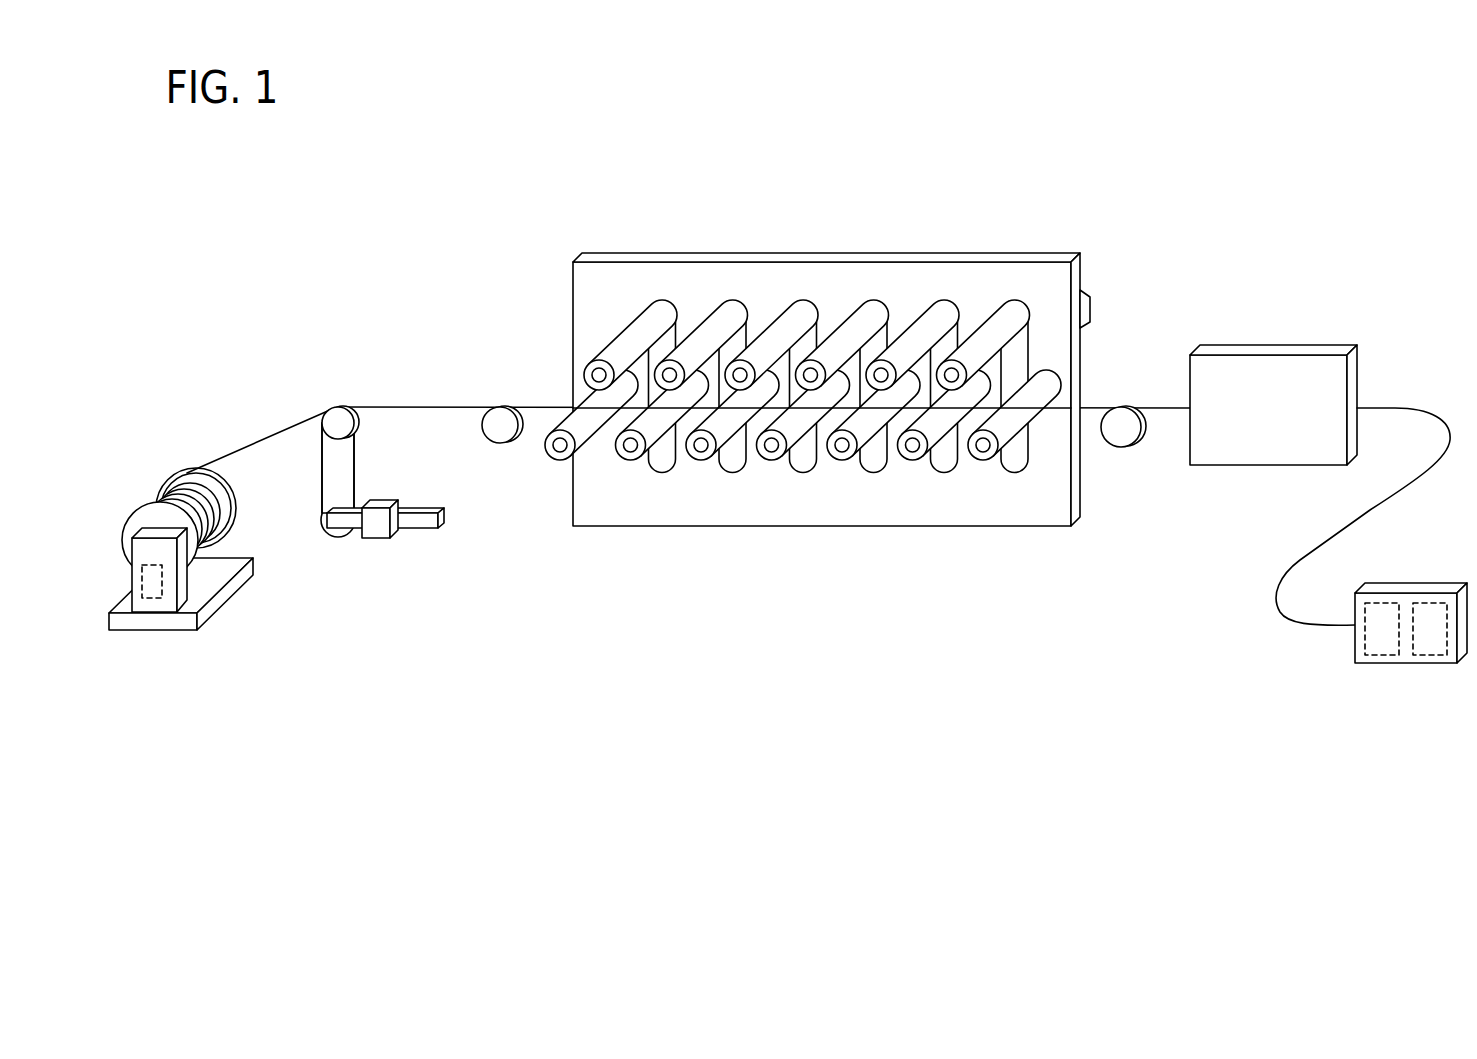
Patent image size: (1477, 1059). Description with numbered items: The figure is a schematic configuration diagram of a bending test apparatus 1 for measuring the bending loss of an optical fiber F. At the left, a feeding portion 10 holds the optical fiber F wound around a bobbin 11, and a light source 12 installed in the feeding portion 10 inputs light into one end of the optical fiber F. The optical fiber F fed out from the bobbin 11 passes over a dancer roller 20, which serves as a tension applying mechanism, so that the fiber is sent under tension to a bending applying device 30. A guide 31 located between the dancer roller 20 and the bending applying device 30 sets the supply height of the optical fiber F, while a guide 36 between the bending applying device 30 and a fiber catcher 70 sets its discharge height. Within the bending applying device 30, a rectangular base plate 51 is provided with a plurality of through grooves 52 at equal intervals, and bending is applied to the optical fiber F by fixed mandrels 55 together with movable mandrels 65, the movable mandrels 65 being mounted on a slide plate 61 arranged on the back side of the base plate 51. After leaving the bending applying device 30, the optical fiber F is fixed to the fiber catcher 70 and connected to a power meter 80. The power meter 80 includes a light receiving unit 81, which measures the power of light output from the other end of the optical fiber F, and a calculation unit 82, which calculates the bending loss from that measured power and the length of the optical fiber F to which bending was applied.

The bending test apparatus 1 is at (352, 238).
The feeding portion 10 is at (140, 470).
The bobbin 11 is at (228, 500).
The light source 12 is at (160, 600).
The optical fiber F is at (250, 440).
The dancer roller 20 is at (338, 400).
The bending applying device 30 is at (672, 235).
The guide 31 is at (500, 436).
The guide 36 is at (1122, 436).
The base plate 51 is at (913, 520).
The through groove 52 is at (733, 468).
The fixed mandrel 55 is at (660, 467).
The slide plate 61 is at (1092, 285).
The movable mandrel 65 is at (1010, 318).
The fiber catcher 70 is at (1307, 330).
The power meter 80 is at (1402, 672).
The light receiving unit 81 is at (1383, 600).
The calculation unit 82 is at (1432, 600).